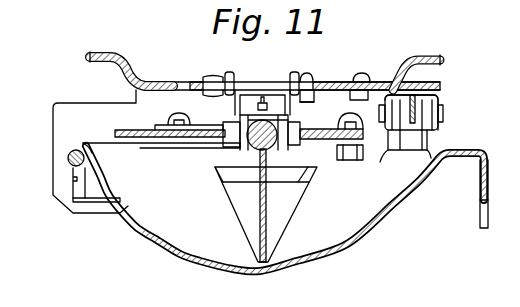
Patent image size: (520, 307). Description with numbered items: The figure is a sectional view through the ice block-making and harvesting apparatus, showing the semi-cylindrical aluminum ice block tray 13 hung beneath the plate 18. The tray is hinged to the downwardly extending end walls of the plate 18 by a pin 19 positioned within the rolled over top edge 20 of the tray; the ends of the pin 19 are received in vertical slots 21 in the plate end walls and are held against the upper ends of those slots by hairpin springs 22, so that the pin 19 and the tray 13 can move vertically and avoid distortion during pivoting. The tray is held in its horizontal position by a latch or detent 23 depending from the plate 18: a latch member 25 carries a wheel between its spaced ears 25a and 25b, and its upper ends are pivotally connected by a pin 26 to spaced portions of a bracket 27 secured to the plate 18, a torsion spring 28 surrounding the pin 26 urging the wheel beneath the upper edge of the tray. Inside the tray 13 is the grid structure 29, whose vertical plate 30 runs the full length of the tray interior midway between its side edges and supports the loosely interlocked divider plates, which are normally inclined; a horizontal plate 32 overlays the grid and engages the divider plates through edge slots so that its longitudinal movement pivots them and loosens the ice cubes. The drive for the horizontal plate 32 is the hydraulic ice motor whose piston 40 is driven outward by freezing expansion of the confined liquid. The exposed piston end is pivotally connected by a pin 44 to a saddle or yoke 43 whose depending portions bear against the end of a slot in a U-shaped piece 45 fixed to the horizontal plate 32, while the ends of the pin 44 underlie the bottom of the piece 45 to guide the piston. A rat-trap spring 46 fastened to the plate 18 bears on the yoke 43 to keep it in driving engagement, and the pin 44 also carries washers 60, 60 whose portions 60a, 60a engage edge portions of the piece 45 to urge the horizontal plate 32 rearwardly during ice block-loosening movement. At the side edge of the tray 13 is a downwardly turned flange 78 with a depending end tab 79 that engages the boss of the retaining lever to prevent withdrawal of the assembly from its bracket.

The ice block tray 13 is at (200, 263).
The plate 18 is at (120, 53).
The pin 19 is at (67, 159).
The rolled over top edge 20 is at (67, 148).
The vertical slots 21 is at (73, 184).
The hairpin springs 22 is at (97, 202).
The latch or detent 23 is at (447, 100).
The latch member 25 is at (420, 152).
The ear of latch member 25a is at (387, 152).
The ear of latch member 25b is at (433, 141).
The pin 26 is at (443, 112).
The bracket 27 is at (442, 97).
The torsion spring 28 is at (417, 97).
The grid structure 29 is at (333, 113).
The vertical plate 30 is at (267, 242).
The horizontal plate 32 is at (131, 130).
The piston 40 is at (266, 120).
The saddle or yoke 43 is at (250, 190).
The pin 44 is at (240, 146).
The U-shaped piece 45 is at (163, 127).
The rat-trap spring 46 is at (228, 78).
The washers 60 is at (243, 152).
The washer portions 60a is at (231, 116).
The downwardly turned flange 78 is at (489, 183).
The depending end tab 79 is at (489, 209).